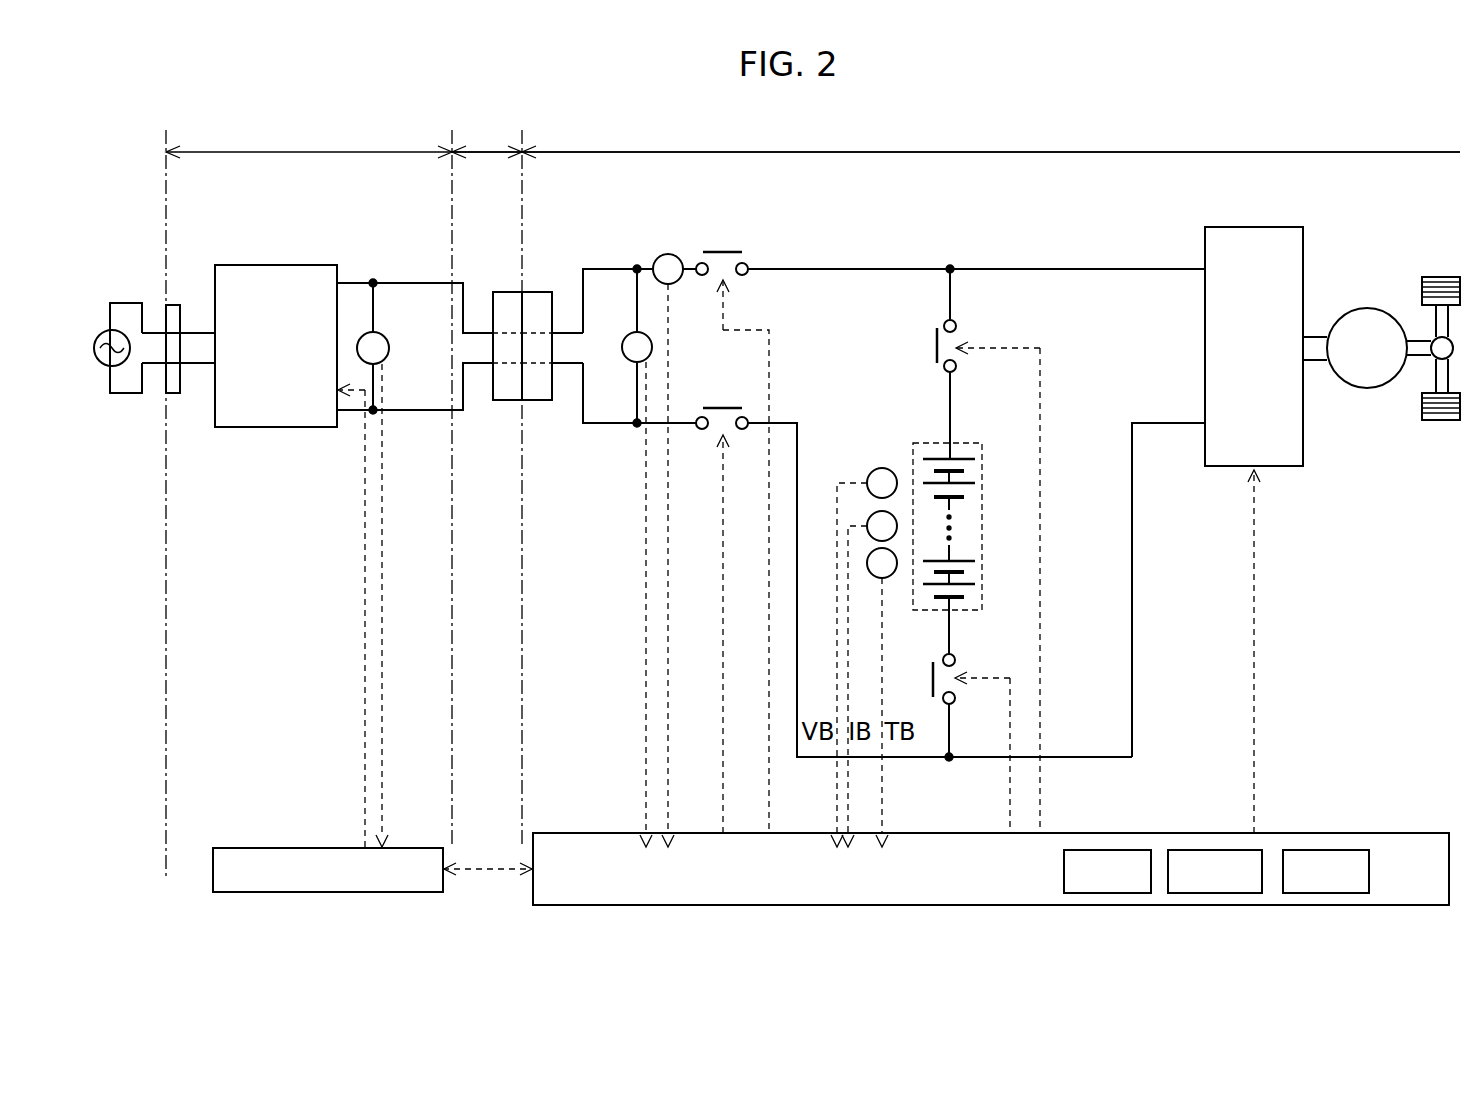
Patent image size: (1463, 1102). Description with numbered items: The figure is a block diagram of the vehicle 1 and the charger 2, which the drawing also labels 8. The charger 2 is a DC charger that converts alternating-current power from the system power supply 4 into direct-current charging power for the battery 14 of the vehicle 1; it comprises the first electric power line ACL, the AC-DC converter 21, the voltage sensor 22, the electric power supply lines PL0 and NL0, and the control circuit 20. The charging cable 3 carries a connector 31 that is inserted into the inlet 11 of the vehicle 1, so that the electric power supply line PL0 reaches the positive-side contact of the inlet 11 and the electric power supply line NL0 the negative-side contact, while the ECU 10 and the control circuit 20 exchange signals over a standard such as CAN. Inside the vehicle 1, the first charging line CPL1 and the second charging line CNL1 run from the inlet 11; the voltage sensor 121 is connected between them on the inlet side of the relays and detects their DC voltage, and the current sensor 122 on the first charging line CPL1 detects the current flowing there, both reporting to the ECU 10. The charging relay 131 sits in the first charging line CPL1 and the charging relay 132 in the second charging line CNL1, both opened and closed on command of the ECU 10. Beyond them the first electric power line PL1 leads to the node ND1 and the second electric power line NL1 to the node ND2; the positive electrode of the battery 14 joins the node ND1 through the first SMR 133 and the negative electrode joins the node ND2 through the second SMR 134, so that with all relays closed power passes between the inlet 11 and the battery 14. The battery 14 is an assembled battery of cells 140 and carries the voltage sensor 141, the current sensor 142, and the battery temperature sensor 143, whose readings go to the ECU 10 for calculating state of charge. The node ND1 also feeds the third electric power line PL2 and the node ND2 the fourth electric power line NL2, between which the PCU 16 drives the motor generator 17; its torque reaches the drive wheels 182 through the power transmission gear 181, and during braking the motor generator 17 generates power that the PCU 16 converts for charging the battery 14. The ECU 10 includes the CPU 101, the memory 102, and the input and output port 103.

The vehicle 1 is at (991, 134).
The charger 2 is at (813, 138).
The charging device 8 is at (310, 133).
The charging cable 3 is at (487, 134).
The system power supply 4 is at (100, 393).
The electronic control unit 10 is at (991, 845).
The CPU 101 is at (1107, 850).
The memory 102 is at (1212, 850).
The input and output port 103 is at (1325, 850).
The inlet 11 is at (542, 292).
The battery 14 is at (964, 502).
The cell 140 is at (965, 455).
The voltage sensor 141 is at (878, 470).
The current sensor 142 is at (868, 520).
The battery temperature sensor 143 is at (886, 580).
The power control unit 16 is at (1255, 227).
The motor generator 17 is at (1367, 308).
The power transmission gear 181 is at (1432, 356).
The drive wheels 182 is at (1440, 277).
The control circuit 20 is at (245, 848).
The AC-DC converter 21 is at (252, 265).
The voltage sensor 22 is at (362, 332).
The connector 31 is at (502, 292).
The voltage sensor 121 is at (624, 340).
The current sensor 122 is at (668, 253).
The charging relay 131 is at (722, 251).
The charging relay 132 is at (722, 407).
The first system main relay 133 is at (932, 345).
The second system main relay 134 is at (956, 694).
The first electric power line ACL is at (192, 316).
The electric power supply line PL0 is at (418, 283).
The electric power supply line NL0 is at (418, 410).
The first charging line CPL1 is at (620, 268).
The second charging line CNL1 is at (623, 426).
The first electric power line PL1 is at (827, 268).
The second electric power line NL1 is at (787, 422).
The third electric power line PL2 is at (1170, 268).
The fourth electric power line NL2 is at (1170, 424).
The node ND1 is at (950, 268).
The node ND2 is at (948, 770).